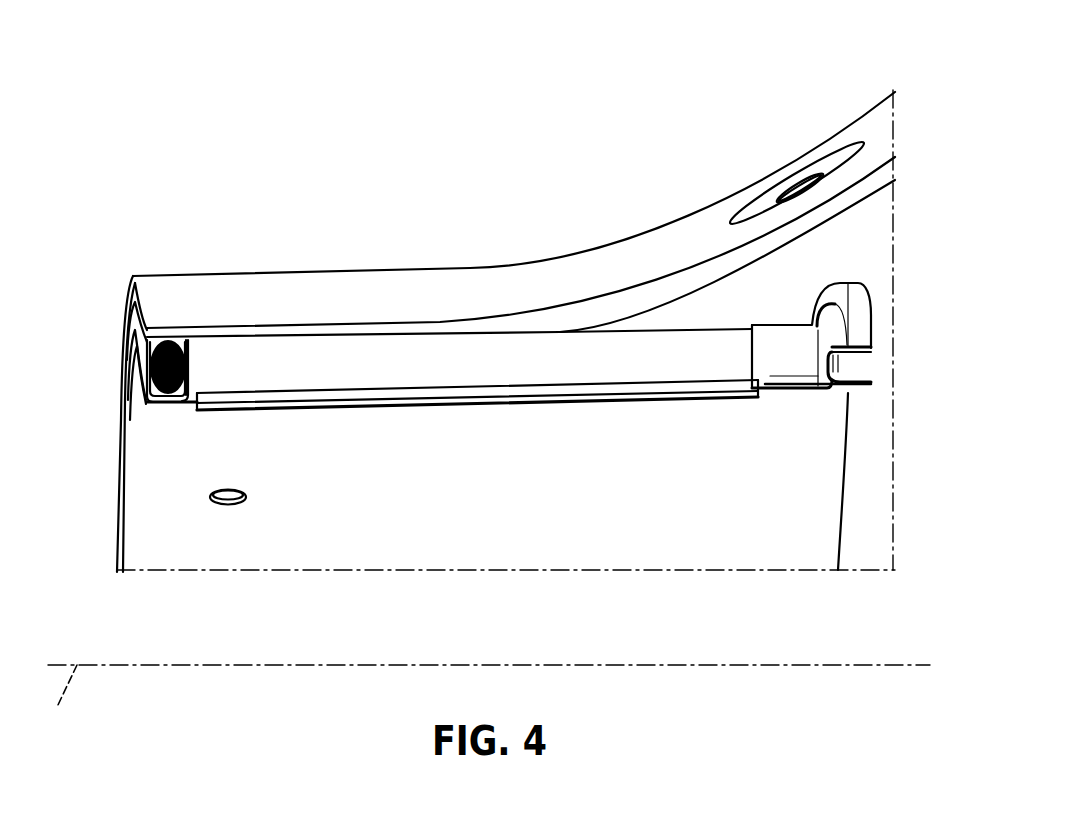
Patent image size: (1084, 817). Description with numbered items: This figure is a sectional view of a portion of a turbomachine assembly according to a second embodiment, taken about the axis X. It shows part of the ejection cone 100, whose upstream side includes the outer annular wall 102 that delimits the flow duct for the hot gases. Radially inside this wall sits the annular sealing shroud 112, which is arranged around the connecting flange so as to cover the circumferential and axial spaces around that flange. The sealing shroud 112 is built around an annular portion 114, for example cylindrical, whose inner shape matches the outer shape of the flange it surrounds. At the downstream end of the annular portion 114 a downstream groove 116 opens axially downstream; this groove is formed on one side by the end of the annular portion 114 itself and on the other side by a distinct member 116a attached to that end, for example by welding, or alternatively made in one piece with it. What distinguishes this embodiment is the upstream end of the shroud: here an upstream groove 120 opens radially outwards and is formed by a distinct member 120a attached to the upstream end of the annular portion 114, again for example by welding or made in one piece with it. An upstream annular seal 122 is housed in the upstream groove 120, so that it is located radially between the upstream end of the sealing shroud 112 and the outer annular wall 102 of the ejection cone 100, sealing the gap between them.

The ejection cone 100 is at (491, 385).
The outer annular wall 102 is at (882, 147).
The annular sealing shroud 112 is at (147, 472).
The annular portion 114 is at (584, 348).
The downstream groove 116 is at (847, 370).
The distinct member 116a is at (848, 295).
The upstream groove 120 is at (151, 303).
The distinct member 120a is at (190, 378).
The upstream annular seal 122 is at (165, 343).